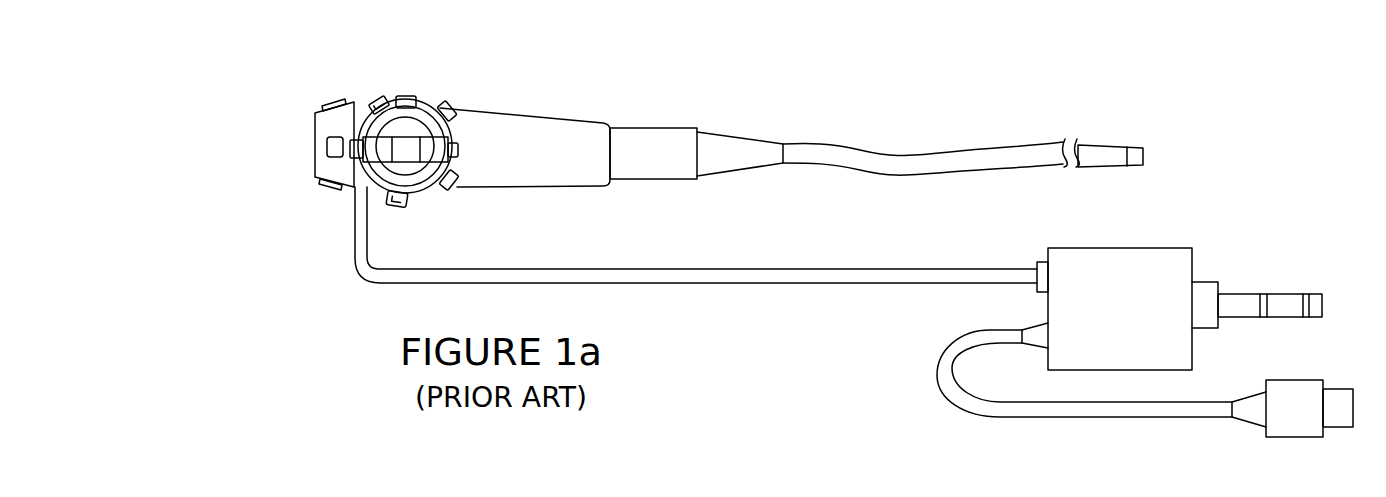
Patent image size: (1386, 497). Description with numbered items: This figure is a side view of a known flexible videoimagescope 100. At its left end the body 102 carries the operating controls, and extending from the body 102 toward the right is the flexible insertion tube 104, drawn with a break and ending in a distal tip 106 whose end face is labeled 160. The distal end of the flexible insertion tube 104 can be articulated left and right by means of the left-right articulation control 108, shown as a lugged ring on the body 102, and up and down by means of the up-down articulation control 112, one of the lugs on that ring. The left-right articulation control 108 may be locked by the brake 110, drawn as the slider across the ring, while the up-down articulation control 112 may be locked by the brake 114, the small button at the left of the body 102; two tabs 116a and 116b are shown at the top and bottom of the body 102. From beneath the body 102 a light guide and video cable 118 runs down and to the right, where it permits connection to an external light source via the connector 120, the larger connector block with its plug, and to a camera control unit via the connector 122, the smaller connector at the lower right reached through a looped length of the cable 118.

The flexible videoimagescope 100 is at (782, 79).
The body 102 is at (568, 124).
The flexible insertion tube 104 is at (885, 163).
The end effector / tip 106 is at (1143, 147).
The left-right articulation control 108 is at (407, 97).
The brake 110 is at (460, 149).
The up-down articulation control 112 is at (452, 109).
The brake 114 is at (328, 151).
The upper tab 116a is at (335, 100).
The lower tab 116b is at (332, 191).
The light guide and video cable 118 is at (647, 271).
The connector 120 is at (1272, 293).
The connector 122 is at (1296, 400).
The tip end 160 is at (1146, 158).